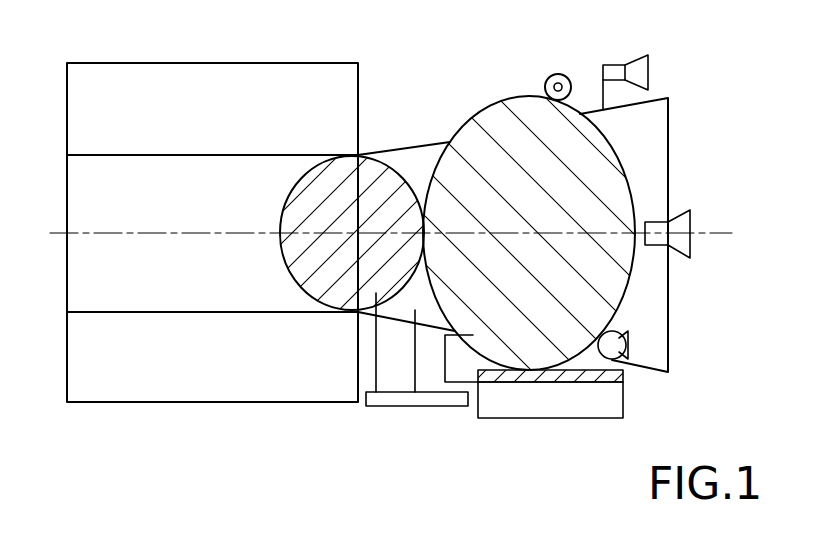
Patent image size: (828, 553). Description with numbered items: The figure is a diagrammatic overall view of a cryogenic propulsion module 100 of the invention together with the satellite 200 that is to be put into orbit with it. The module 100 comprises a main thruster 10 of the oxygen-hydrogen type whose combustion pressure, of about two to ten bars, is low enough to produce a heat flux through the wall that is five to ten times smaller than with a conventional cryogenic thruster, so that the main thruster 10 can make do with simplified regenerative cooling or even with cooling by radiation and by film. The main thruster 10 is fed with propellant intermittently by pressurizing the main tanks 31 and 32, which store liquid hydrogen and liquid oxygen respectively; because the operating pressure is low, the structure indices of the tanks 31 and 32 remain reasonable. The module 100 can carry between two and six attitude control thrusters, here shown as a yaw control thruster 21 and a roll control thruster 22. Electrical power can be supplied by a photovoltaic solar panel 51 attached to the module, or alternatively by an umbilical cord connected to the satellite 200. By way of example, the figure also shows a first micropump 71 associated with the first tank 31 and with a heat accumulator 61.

The cryogenic propulsion module 100 is at (473, 443).
The satellite 200 is at (135, 63).
The main tank 32 is at (372, 160).
The main tank 31 is at (492, 118).
The roll control thruster 22 is at (562, 74).
The yaw control thruster 21 is at (650, 70).
The main thruster 10 is at (692, 249).
The first micropump 71 is at (613, 345).
The heat accumulator 61 is at (624, 378).
The photovoltaic solar panel 51 is at (403, 400).